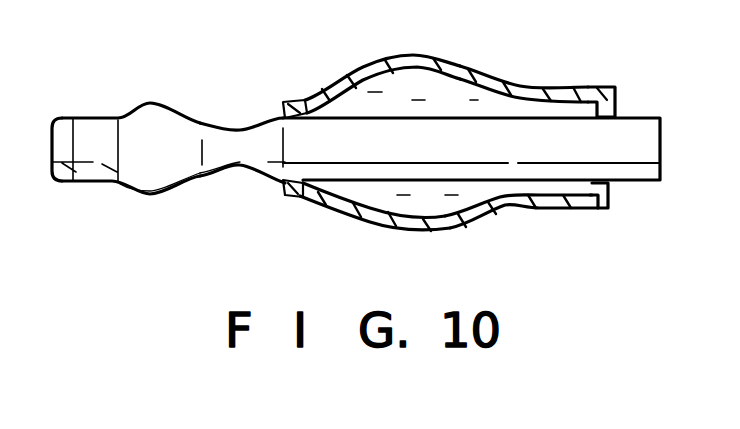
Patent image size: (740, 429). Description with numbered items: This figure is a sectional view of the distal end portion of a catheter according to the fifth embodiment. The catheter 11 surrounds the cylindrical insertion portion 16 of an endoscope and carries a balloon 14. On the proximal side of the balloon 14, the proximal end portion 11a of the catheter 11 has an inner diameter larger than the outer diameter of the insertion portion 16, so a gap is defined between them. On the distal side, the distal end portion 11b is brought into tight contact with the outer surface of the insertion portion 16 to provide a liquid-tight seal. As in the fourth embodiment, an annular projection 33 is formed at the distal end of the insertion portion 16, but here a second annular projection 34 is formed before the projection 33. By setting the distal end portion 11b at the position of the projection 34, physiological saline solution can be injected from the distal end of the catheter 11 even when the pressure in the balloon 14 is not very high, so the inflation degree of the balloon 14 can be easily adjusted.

The catheter 11 is at (570, 210).
The proximal end portion 11a is at (540, 84).
The distal end portion 11b is at (303, 198).
The balloon 14 is at (456, 63).
The insertion portion 16 is at (590, 85).
The annular projection 33 is at (148, 195).
The annular projection 34 is at (237, 168).